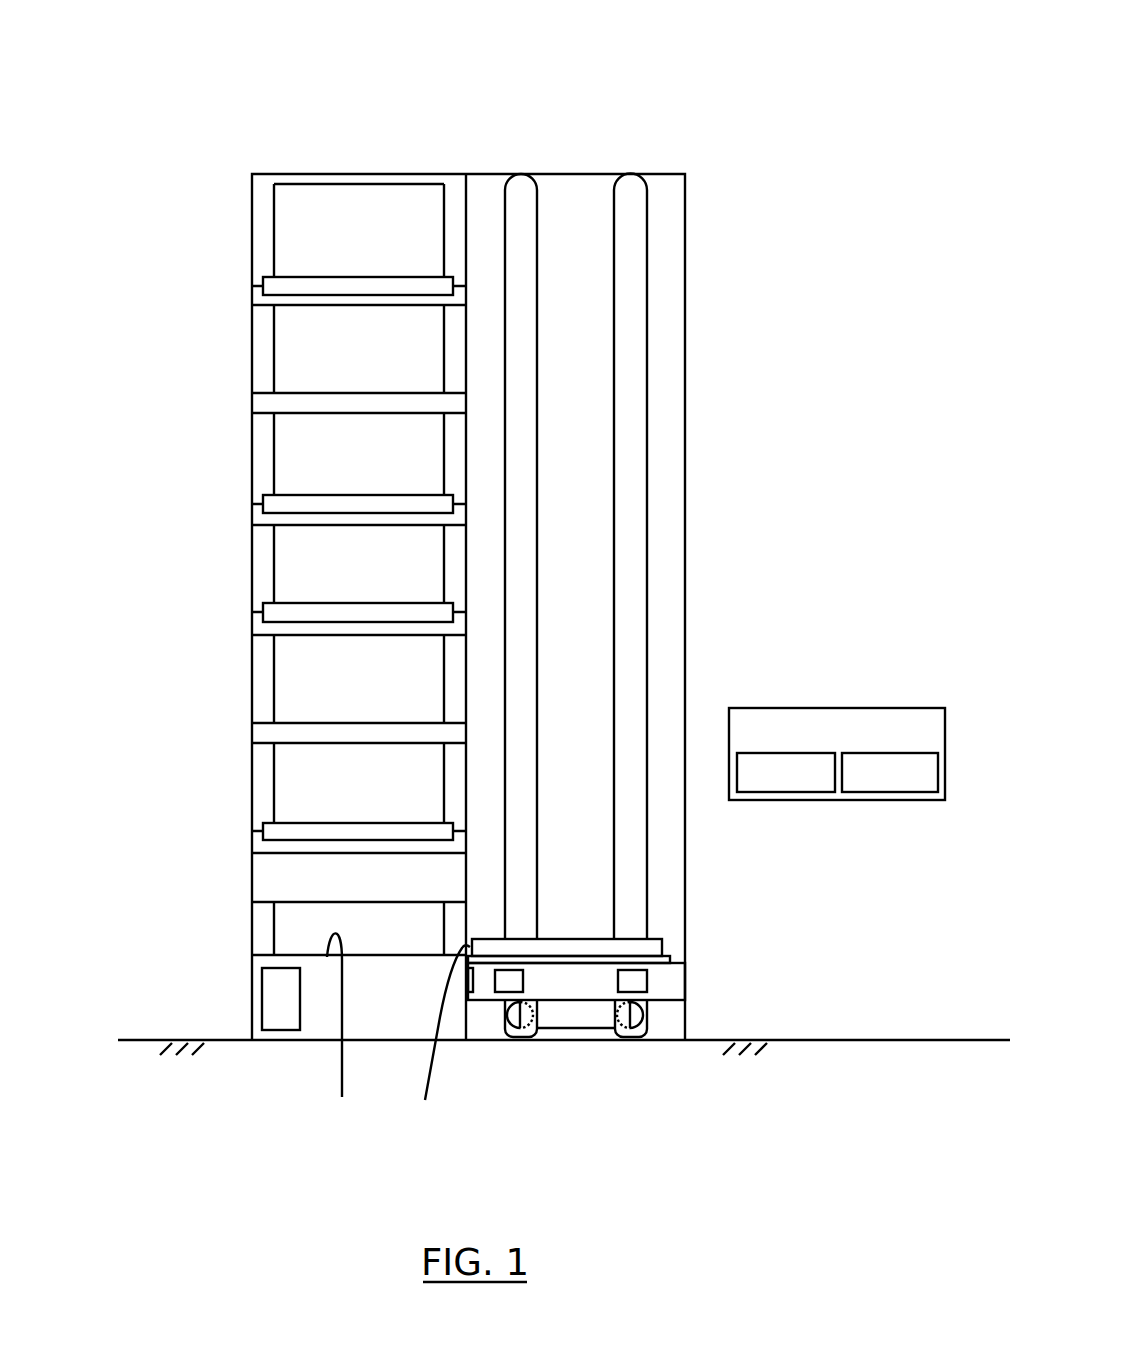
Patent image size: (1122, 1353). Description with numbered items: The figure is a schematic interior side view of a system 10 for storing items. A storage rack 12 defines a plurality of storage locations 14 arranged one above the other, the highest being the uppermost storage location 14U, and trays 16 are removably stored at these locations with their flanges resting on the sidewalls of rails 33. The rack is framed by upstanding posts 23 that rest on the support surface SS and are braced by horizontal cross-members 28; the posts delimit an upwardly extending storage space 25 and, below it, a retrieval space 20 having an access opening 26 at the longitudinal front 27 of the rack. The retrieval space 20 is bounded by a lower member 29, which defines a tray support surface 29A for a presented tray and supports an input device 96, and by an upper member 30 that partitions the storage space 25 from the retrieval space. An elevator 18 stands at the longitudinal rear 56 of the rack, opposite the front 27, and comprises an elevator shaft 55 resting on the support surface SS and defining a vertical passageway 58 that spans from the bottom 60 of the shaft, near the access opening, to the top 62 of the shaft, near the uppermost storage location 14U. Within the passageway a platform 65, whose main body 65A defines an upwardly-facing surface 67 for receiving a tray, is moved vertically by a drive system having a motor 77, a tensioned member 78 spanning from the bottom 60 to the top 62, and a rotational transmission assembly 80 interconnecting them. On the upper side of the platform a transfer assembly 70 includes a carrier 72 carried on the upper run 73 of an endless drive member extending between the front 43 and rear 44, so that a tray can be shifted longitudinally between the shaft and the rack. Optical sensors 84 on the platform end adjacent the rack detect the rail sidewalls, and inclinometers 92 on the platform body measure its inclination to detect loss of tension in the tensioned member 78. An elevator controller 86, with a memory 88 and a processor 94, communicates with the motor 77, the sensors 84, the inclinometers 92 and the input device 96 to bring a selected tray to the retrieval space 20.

The system for storing items 10 is at (158, 130).
The storage rack 12 is at (393, 168).
The storage locations 14 is at (219, 602).
The uppermost storage location 14U is at (236, 289).
The trays 16 is at (292, 603).
The elevator 18 is at (690, 65).
The retrieval space 20 is at (246, 933).
The upstanding posts 23 is at (264, 185).
The storage space 25 is at (357, 210).
The access opening 26 is at (246, 913).
The longitudinal front 27 is at (246, 1007).
The horizontal cross-members 28 is at (313, 178).
The lower longitudinally extending member 29 is at (263, 968).
The tray support surface 29A is at (342, 1033).
The upper longitudinally extending member 30 is at (263, 875).
The rails 33 is at (288, 722).
The front 43 is at (436, 1040).
The rear 44 is at (665, 948).
The elevator shaft 55 is at (575, 170).
The longitudinal rear 56 is at (472, 1022).
The passageway 58 is at (591, 198).
The bottom of the elevator shaft 60 is at (672, 1043).
The top of the elevator shaft 62 is at (663, 177).
The platform 65 is at (690, 985).
The main body of the platform 65A is at (603, 997).
The upwardly-facing surface 67 is at (597, 953).
The transfer assembly 70 is at (840, 940).
The carrier 72 is at (668, 953).
The upper run 73 is at (653, 970).
The motor 77 is at (580, 1028).
The tensioned member 78 is at (515, 168).
The rotational transmission assembly 80 is at (606, 1021).
The optical sensors 84 is at (468, 975).
The elevator controller 86 is at (838, 708).
The memory 88 is at (910, 792).
The inclinometers 92 is at (512, 968).
The processor 94 is at (810, 792).
The input device 96 is at (285, 1032).
The support surface SS is at (138, 1040).